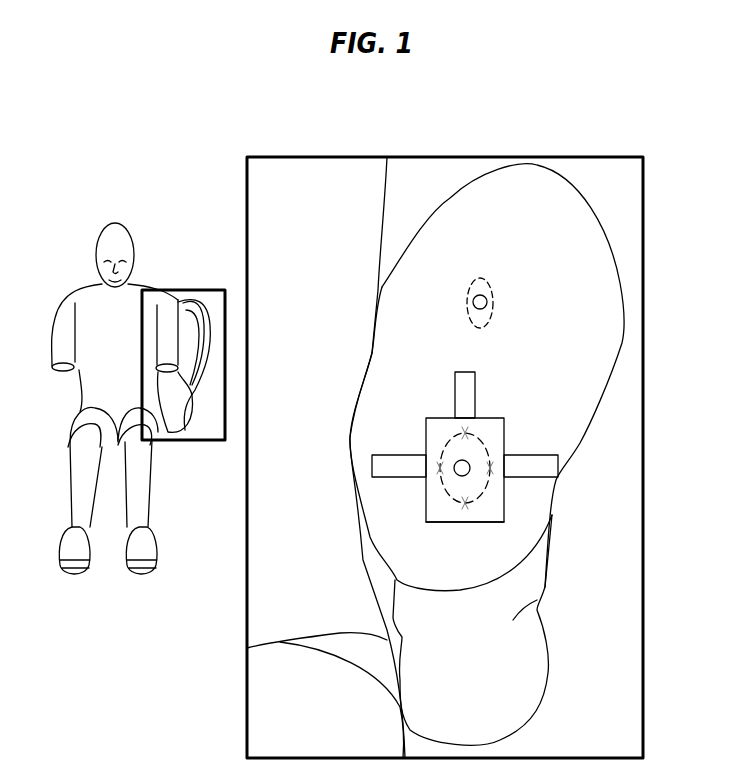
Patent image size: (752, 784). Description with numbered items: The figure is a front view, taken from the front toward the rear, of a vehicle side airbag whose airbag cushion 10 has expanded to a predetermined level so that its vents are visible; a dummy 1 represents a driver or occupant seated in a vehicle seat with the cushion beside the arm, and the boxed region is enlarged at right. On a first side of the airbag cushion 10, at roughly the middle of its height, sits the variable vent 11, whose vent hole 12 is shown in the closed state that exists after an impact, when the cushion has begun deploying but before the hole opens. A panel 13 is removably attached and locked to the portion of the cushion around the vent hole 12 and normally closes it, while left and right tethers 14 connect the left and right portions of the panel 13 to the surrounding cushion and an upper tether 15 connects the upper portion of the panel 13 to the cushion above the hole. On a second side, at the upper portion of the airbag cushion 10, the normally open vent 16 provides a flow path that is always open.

The dummy 1 is at (93, 307).
The airbag cushion 10 is at (183, 420).
The variable vent 11 is at (548, 510).
The vent hole 12 is at (463, 468).
The panel 13 is at (462, 522).
The left and right tethers 14 is at (390, 460).
The upper tether 15 is at (470, 393).
The normally open vent 16 is at (490, 297).